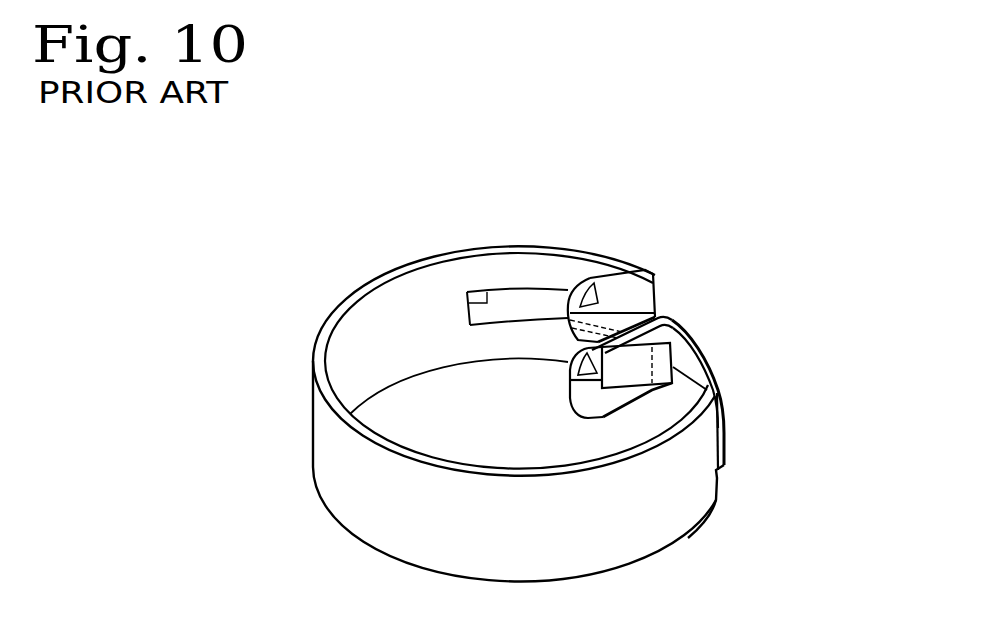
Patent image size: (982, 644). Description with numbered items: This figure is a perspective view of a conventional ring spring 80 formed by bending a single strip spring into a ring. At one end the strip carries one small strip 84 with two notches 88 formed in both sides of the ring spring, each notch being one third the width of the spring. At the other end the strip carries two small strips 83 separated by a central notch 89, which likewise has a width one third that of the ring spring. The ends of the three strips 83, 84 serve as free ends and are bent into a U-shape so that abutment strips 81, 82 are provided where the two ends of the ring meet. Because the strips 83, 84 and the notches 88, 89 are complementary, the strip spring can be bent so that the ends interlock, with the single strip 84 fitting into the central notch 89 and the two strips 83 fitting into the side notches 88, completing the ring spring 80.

The ring spring 80 is at (407, 255).
The abutment strip 81 is at (635, 310).
The abutment strip 82 is at (671, 321).
The small strips 83 is at (518, 325).
The small strip 84 is at (710, 356).
The notches 88 is at (722, 397).
The central notch 89 is at (490, 292).